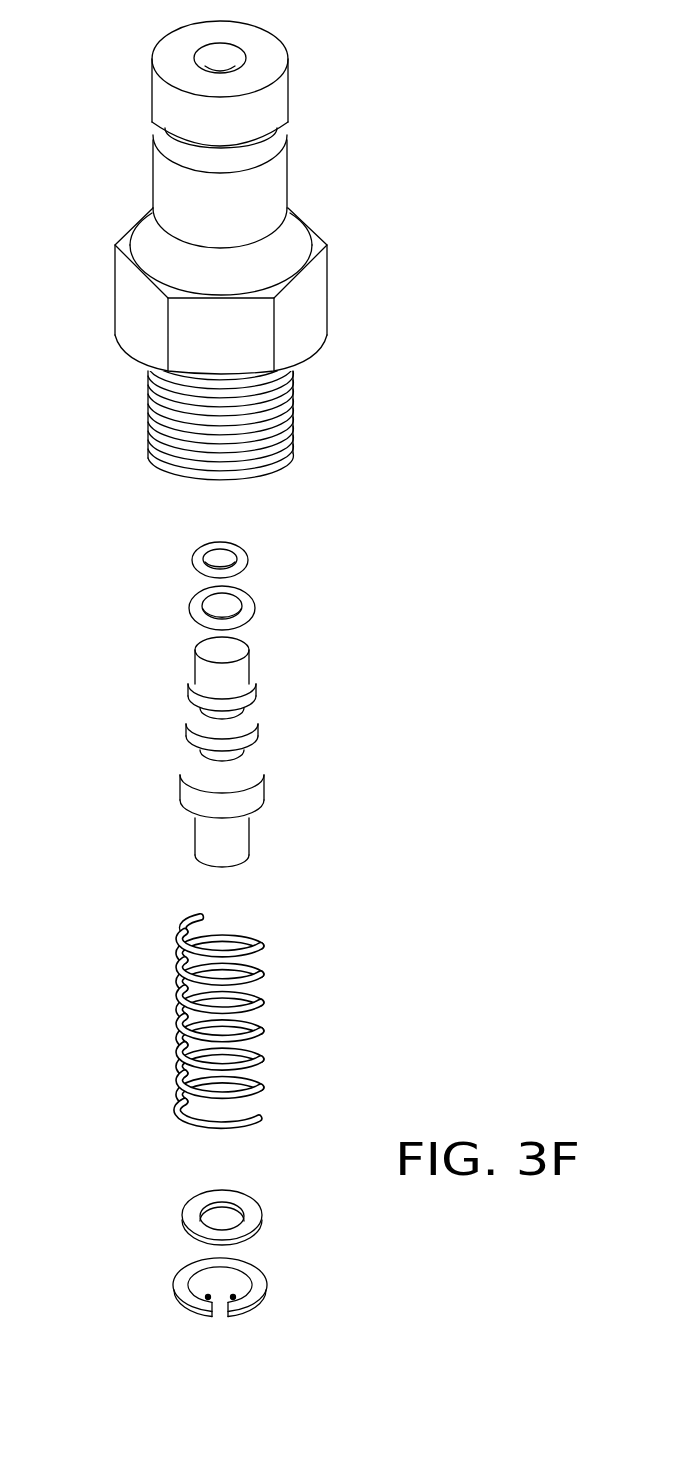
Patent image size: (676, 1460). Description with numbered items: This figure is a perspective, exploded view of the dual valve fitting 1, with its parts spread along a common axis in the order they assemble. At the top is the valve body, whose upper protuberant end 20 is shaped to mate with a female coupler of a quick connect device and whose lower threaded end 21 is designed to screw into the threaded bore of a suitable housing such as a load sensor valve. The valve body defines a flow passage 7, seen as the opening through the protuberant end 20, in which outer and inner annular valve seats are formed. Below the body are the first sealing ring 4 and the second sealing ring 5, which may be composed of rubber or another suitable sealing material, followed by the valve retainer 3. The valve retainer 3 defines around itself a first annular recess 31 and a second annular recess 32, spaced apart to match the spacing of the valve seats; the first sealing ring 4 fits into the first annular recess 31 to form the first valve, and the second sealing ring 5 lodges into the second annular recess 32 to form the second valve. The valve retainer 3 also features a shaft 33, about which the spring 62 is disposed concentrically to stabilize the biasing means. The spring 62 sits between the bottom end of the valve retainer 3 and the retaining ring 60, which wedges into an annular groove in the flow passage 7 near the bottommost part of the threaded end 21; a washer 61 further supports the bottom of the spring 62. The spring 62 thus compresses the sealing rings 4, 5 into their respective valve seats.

The dual valve fitting 1 is at (384, 497).
The protuberant end 20 is at (168, 104).
The flow passage 7 is at (230, 62).
The threaded end 21 is at (168, 410).
The first sealing ring 4 is at (247, 561).
The second sealing ring 5 is at (195, 608).
The valve retainer 3 is at (190, 703).
The first annular recess 31 is at (245, 706).
The second annular recess 32 is at (198, 758).
The shaft 33 is at (237, 830).
The spring 62 is at (258, 1018).
The washer 61 is at (190, 1217).
The retaining ring 60 is at (262, 1282).